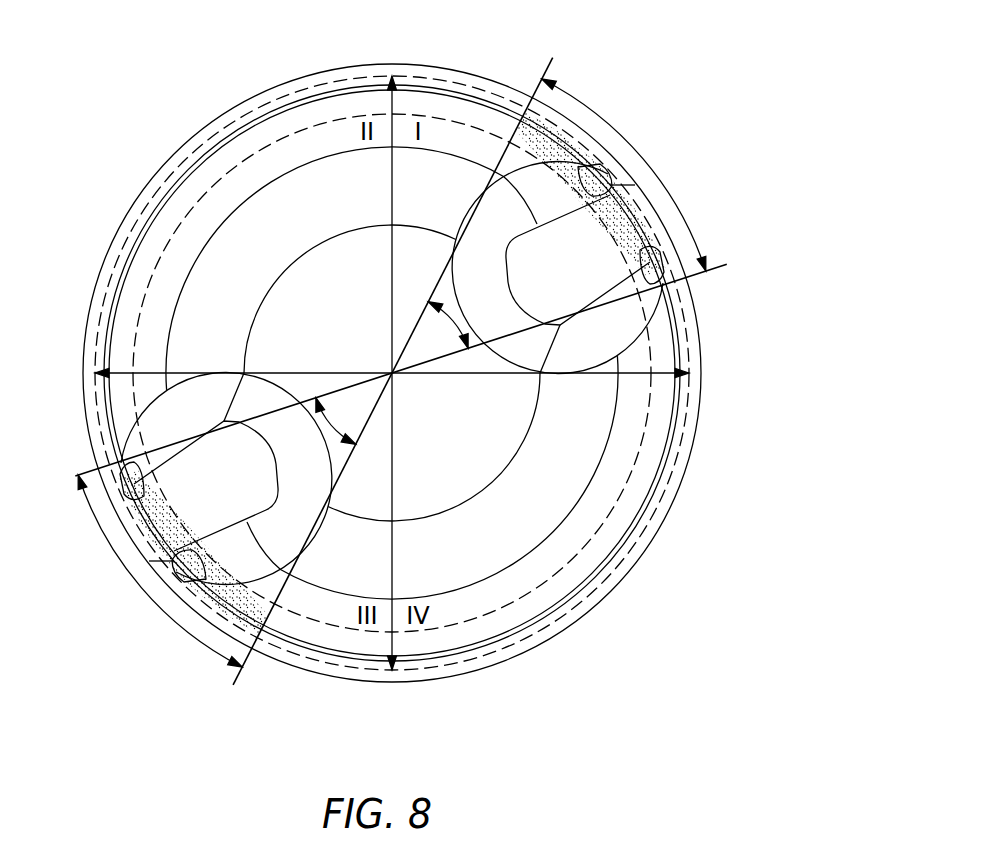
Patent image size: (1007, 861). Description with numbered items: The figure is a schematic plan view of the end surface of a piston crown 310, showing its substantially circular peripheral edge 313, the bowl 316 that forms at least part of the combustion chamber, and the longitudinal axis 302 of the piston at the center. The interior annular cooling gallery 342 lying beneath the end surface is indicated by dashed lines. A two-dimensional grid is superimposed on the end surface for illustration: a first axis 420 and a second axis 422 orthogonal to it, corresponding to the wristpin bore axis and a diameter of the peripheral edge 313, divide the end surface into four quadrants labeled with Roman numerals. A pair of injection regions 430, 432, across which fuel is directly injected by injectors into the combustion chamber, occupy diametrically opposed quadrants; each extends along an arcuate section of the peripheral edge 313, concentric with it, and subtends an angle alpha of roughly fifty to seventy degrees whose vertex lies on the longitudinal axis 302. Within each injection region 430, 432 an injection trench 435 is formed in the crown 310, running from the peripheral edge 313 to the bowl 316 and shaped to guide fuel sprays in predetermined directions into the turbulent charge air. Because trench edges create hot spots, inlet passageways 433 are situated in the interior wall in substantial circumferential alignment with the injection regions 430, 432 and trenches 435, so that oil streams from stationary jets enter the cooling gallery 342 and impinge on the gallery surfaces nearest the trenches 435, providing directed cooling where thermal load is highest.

The longitudinal axis 302 is at (402, 380).
The crown 310 is at (158, 180).
The substantially circular peripheral edge 313 is at (93, 287).
The bowl 316 is at (293, 213).
The interior annular cooling gallery 342 is at (478, 112).
The first axis 420 is at (650, 378).
The second axis 422 is at (398, 103).
The injection region 430 is at (607, 119).
The injection region 432 is at (153, 606).
The inlet passageways 433 is at (143, 520).
The injection trenches 435 is at (640, 220).